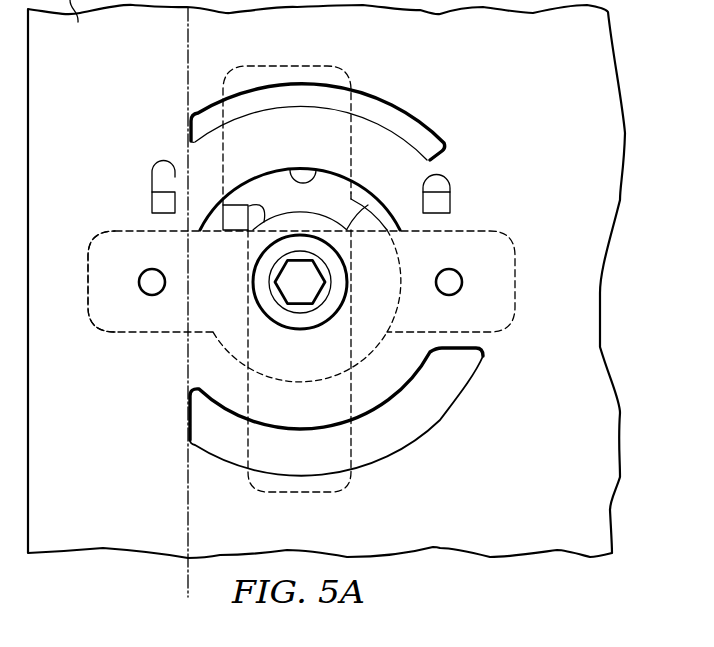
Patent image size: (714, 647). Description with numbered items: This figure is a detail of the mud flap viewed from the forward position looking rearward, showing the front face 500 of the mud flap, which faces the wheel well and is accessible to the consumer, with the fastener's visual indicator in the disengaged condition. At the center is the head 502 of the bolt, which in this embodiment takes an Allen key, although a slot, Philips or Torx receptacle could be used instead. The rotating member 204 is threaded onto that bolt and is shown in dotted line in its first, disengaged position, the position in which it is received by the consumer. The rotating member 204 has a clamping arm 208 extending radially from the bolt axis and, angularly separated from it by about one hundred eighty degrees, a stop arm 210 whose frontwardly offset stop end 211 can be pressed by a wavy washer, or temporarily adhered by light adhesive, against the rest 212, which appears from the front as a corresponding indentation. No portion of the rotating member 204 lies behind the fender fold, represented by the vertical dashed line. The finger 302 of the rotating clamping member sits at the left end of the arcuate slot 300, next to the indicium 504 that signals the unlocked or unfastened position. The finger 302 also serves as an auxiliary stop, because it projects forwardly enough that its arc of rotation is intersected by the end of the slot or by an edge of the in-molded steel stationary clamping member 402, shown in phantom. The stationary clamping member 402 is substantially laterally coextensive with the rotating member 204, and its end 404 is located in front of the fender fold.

The front face 500 is at (500, 512).
The head 502 is at (290, 330).
The indicium 504 is at (148, 202).
The stationary clamping member 402 is at (150, 333).
The end 404 is at (88, 297).
The arcuate slot 300 is at (303, 183).
The finger 302 is at (249, 212).
The stop end 211 is at (368, 206).
The stop arm 210 is at (290, 65).
The clamping arm 208 is at (300, 493).
The rotating member 204 is at (378, 122).
The rest 212 is at (445, 130).